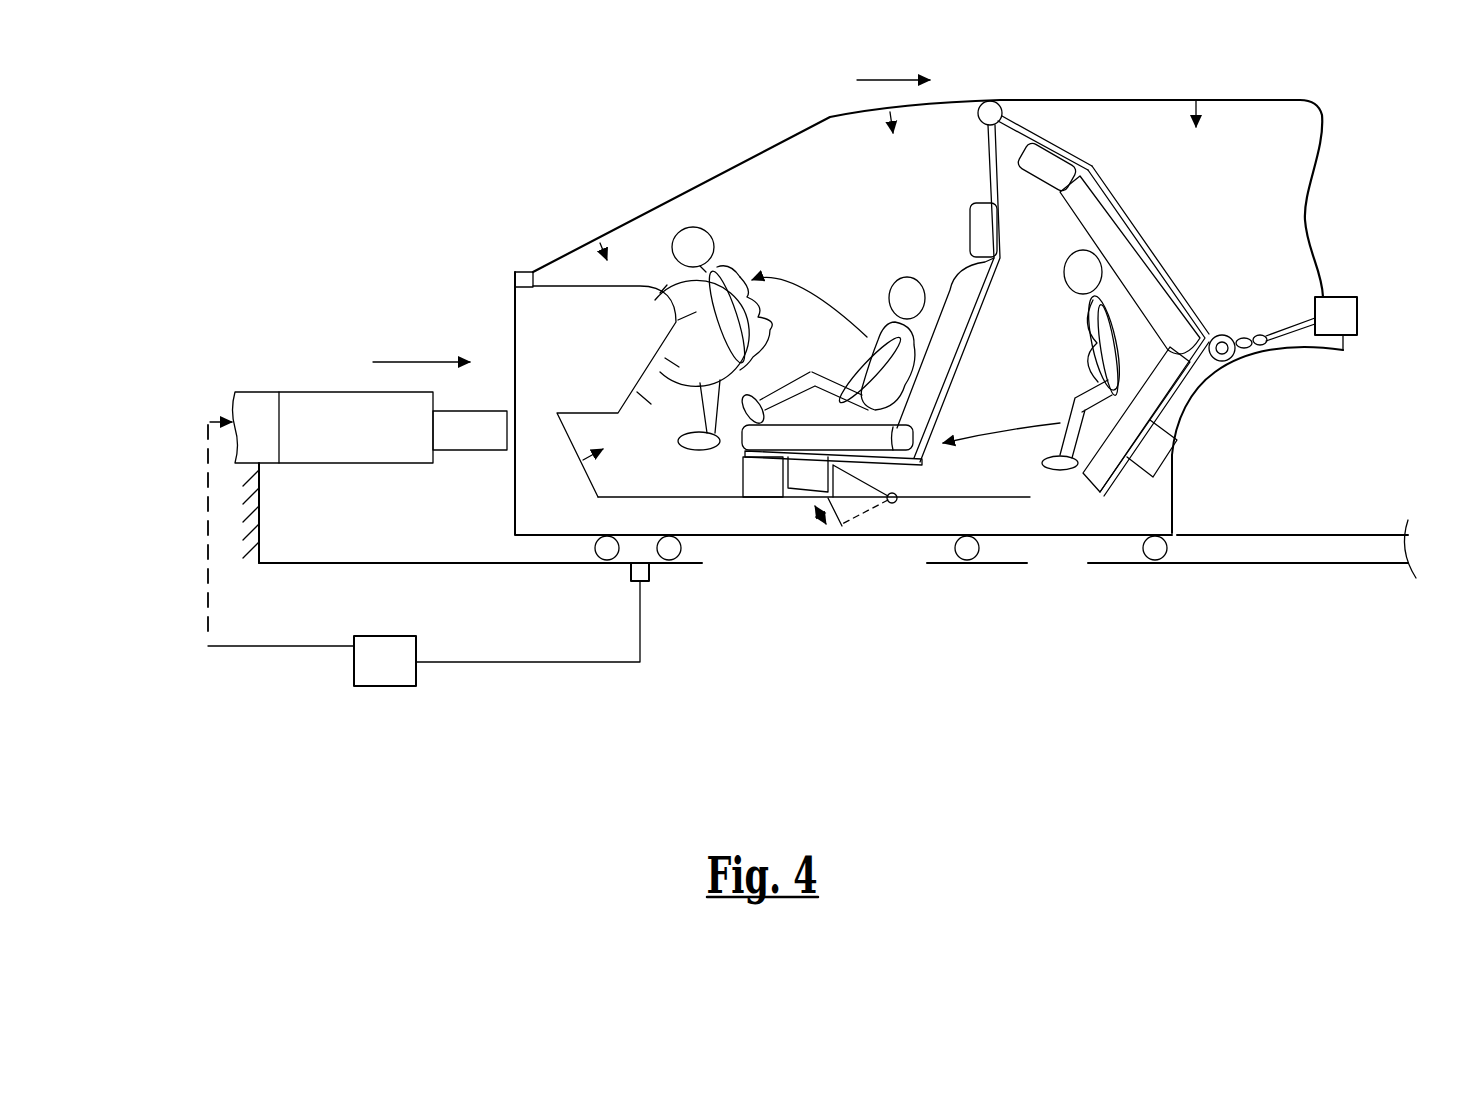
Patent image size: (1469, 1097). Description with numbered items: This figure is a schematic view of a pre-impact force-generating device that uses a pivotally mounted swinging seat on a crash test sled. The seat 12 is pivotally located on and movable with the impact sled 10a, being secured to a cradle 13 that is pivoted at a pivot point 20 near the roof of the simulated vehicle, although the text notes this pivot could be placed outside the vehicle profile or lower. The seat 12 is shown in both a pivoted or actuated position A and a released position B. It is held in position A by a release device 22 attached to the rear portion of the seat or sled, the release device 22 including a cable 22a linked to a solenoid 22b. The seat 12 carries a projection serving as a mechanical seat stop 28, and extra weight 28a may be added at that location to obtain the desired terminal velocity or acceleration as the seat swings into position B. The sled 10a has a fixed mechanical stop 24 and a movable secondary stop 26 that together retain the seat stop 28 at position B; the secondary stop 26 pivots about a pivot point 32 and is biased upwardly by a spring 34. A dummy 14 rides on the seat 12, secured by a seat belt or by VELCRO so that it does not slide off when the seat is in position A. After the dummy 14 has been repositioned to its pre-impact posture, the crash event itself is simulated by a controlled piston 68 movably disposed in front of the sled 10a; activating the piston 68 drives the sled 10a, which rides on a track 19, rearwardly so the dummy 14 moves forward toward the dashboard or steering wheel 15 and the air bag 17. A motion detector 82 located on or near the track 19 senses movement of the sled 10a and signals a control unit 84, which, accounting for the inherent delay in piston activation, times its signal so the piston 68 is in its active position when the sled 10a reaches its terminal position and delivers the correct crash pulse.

The impact sled 10a is at (548, 257).
The seat 12 is at (867, 440).
The cradle 13 is at (1037, 135).
The dummy 14 is at (737, 267).
The dashboard or steering wheel 15 is at (657, 313).
The air bag 17 is at (683, 293).
The track 19 is at (1220, 548).
The pivot point 20 is at (995, 101).
The release device 22 is at (1362, 329).
The cable 22a is at (1290, 325).
The solenoid 22b is at (1340, 313).
The fixed mechanical stop 24 is at (742, 480).
The movable secondary stop 26 is at (843, 528).
The mechanical seat stop 28 is at (795, 492).
The extra weight 28a is at (795, 472).
The pivot point 32 is at (897, 500).
The spring 34 is at (867, 510).
The controlled piston 68 is at (330, 407).
The motion detector 82 is at (630, 575).
The control unit 84 is at (404, 676).
The pivoted or actuated position A is at (1148, 252).
The released position B is at (947, 333).